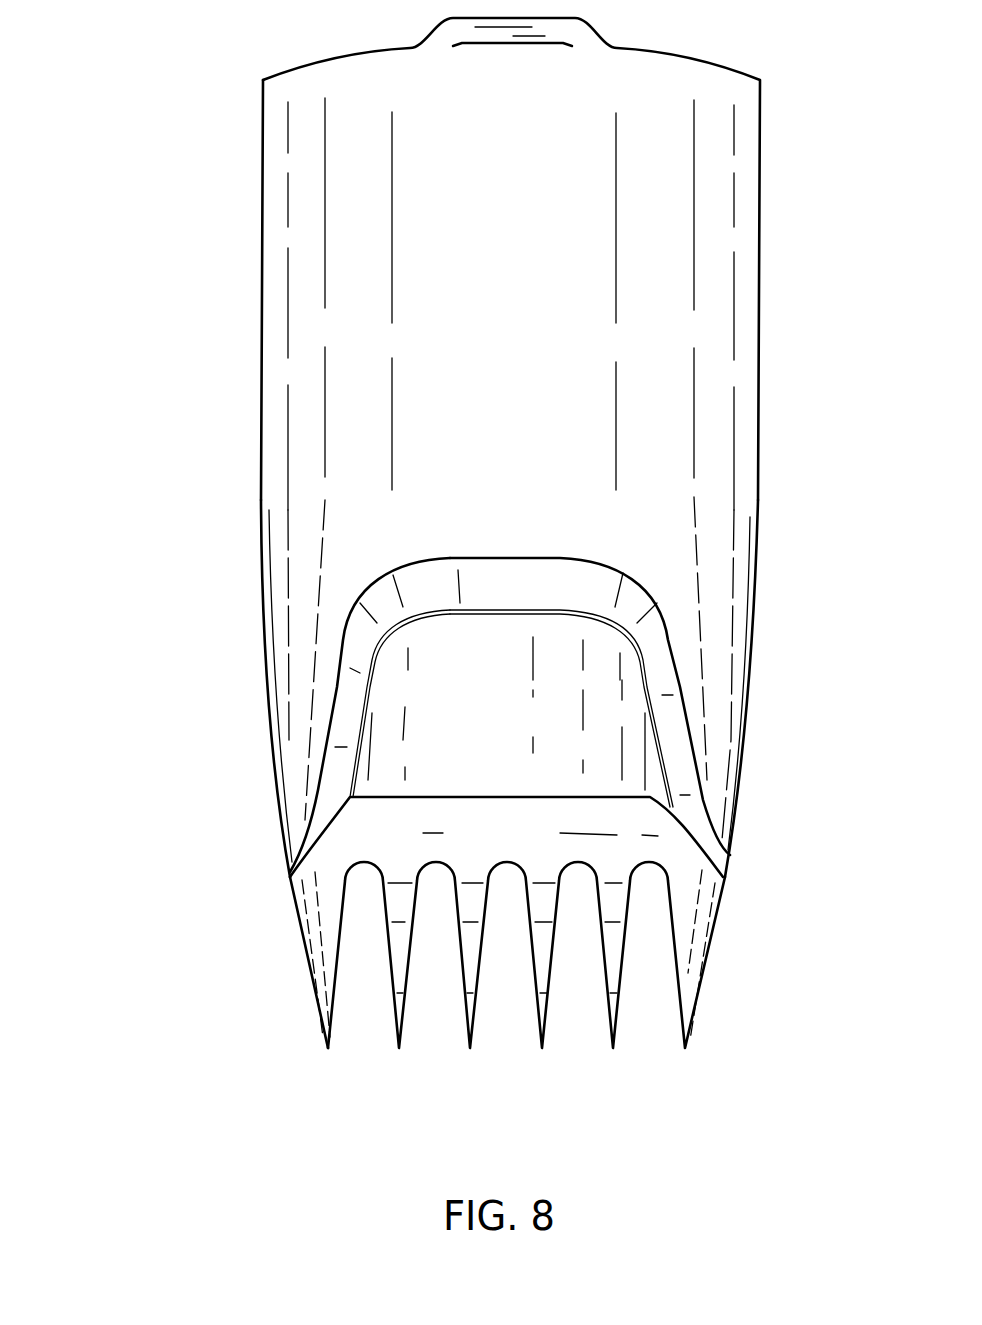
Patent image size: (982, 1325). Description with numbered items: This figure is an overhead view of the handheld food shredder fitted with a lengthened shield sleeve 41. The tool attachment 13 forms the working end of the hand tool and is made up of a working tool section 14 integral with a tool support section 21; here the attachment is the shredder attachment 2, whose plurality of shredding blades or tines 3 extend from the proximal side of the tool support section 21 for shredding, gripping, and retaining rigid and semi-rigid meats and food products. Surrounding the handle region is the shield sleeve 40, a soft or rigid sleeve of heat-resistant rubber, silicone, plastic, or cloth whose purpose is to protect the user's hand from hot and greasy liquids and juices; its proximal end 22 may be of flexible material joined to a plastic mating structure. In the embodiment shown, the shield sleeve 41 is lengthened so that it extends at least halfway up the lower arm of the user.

The shredder attachment 2 is at (728, 918).
The tines 3 is at (711, 1080).
The tool attachment 13 is at (270, 918).
The working tool section 14 is at (292, 972).
The tool support section 21 is at (345, 848).
The proximal end 22 is at (295, 723).
The shield sleeve 40 is at (242, 579).
The shield sleeve 41 is at (305, 290).